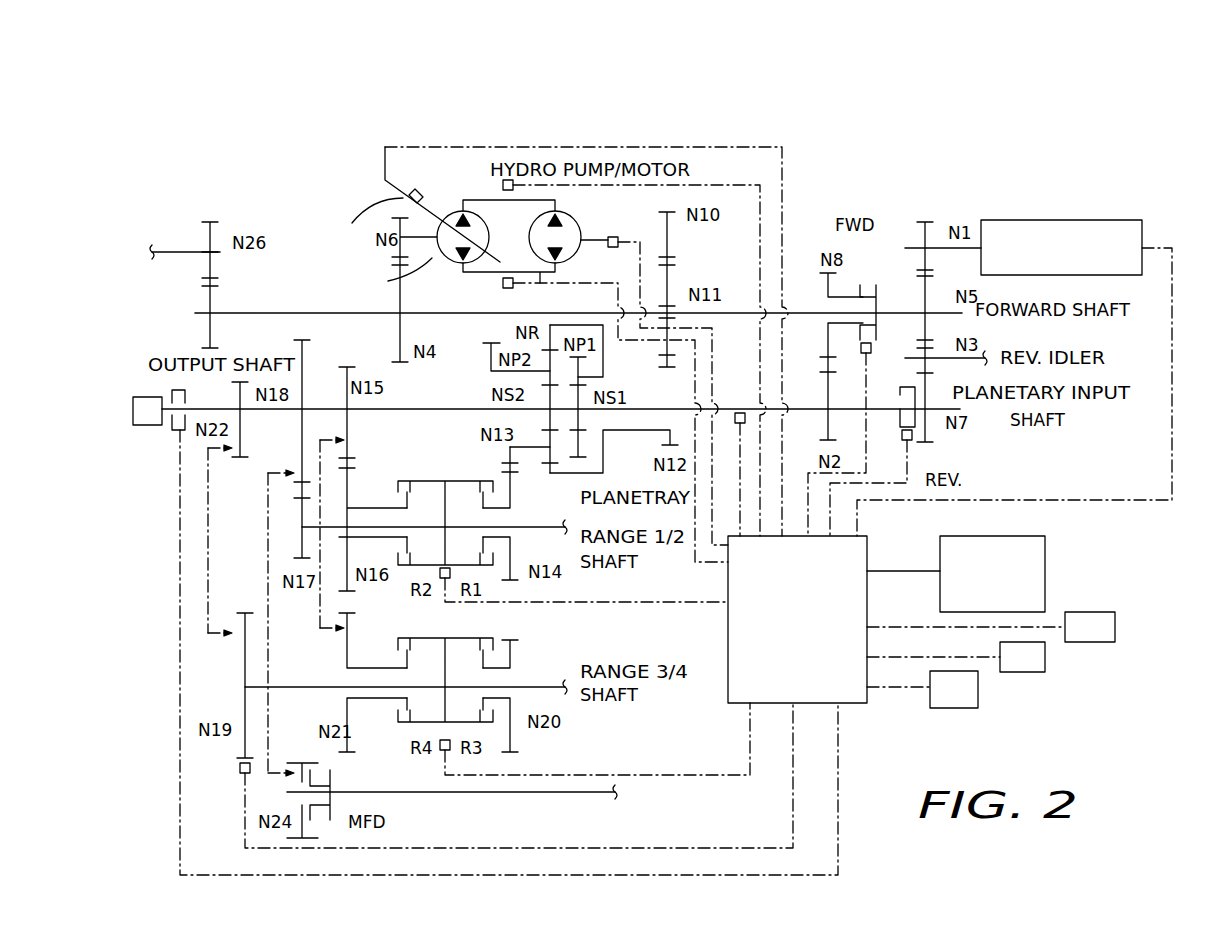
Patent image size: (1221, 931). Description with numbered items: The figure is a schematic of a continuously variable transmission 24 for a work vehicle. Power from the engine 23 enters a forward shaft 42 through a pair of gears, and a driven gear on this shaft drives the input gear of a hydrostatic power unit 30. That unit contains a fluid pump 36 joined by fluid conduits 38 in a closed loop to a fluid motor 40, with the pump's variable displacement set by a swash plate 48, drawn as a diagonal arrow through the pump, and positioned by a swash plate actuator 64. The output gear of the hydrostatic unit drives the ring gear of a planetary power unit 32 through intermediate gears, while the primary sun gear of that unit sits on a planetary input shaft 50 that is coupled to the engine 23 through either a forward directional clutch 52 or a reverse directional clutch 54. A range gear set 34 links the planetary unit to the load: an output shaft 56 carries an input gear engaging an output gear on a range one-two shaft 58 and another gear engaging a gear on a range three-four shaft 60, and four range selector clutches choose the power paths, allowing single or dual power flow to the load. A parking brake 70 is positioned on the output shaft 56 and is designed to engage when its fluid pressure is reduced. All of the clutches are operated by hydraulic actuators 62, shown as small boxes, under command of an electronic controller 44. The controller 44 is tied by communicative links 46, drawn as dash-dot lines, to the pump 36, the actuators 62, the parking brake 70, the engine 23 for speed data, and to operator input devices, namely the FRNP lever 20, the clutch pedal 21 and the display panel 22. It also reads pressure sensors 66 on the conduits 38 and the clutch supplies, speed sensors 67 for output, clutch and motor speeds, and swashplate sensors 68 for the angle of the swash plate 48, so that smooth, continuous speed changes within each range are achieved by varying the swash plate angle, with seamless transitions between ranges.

The FRNP lever 20 is at (1053, 570).
The clutch pedal 21 is at (992, 574).
The display panel 22 is at (1046, 562).
The engine 23 is at (1144, 228).
The continuously variable transmission 24 is at (955, 209).
The hydrostatic power unit 30 is at (483, 230).
The planetary power unit 32 is at (476, 420).
The range gear set 34 is at (591, 608).
The fluid pump 36 is at (455, 264).
The fluid conduits 38 is at (572, 214).
The fluid motor 40 is at (583, 236).
The forward shaft 42 is at (270, 312).
The electronic controller 44 is at (870, 615).
The communicative link 46 is at (785, 205).
The swash plate 48 is at (396, 277).
The planetary input shaft 50 is at (640, 408).
The forward directional clutch 52 is at (868, 286).
The reverse directional clutch 54 is at (935, 425).
The output shaft 56 is at (290, 413).
The range 1/2 shaft 58 is at (525, 520).
The range 3/4 shaft 60 is at (285, 686).
The hydraulic actuators 62 is at (872, 346).
The swash plate actuator 64 is at (365, 225).
The pressure sensors 66 is at (503, 184).
The speed sensors 67 is at (1022, 657).
The swashplate sensors 68 is at (608, 246).
The parking brake 70 is at (187, 398).